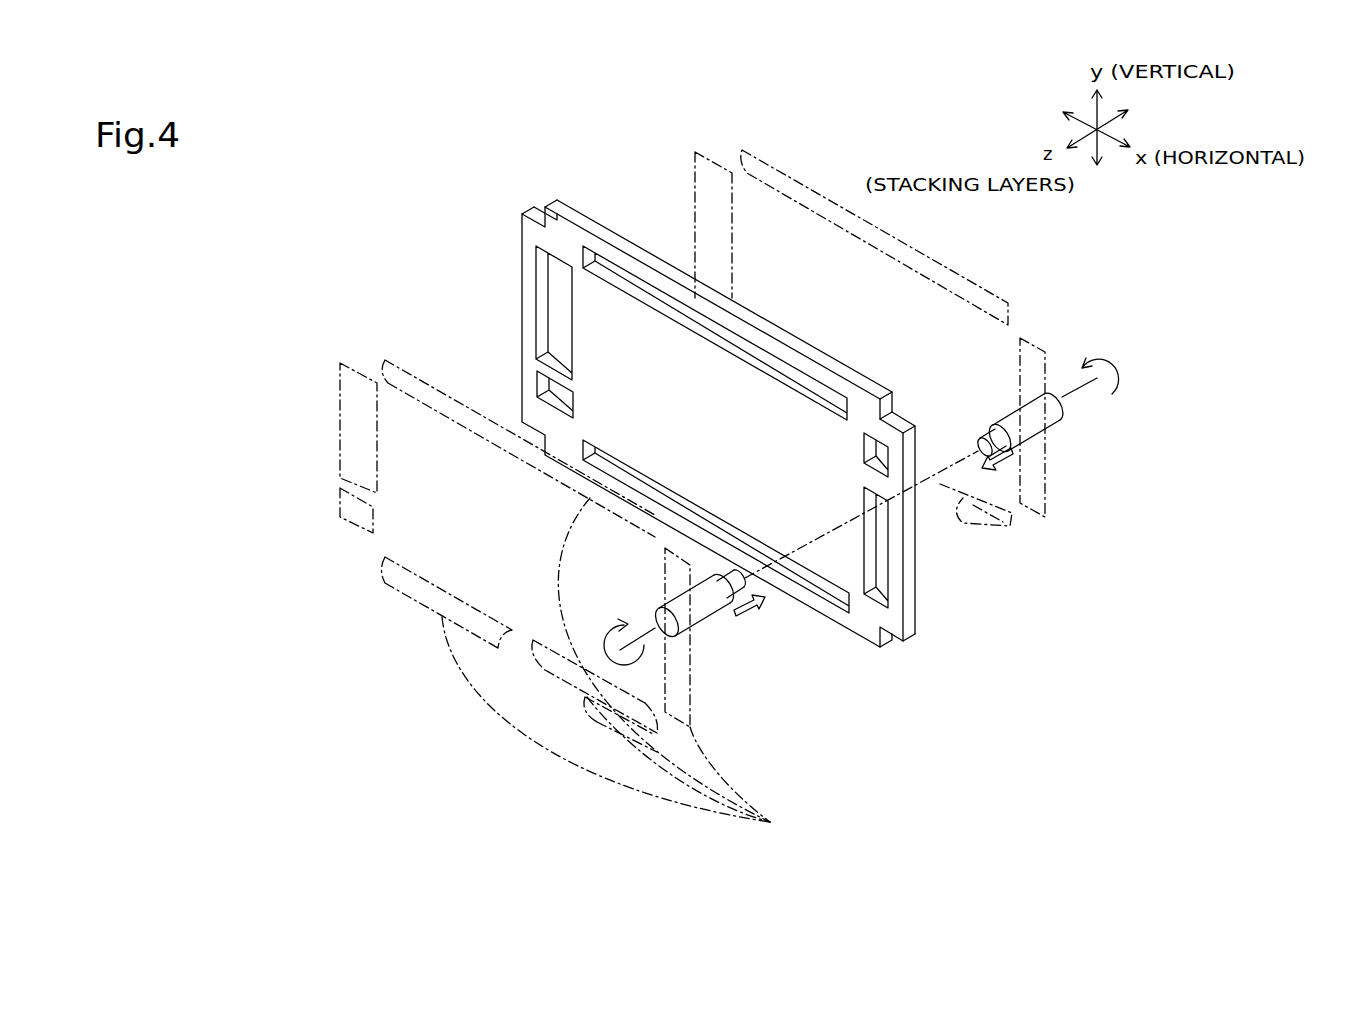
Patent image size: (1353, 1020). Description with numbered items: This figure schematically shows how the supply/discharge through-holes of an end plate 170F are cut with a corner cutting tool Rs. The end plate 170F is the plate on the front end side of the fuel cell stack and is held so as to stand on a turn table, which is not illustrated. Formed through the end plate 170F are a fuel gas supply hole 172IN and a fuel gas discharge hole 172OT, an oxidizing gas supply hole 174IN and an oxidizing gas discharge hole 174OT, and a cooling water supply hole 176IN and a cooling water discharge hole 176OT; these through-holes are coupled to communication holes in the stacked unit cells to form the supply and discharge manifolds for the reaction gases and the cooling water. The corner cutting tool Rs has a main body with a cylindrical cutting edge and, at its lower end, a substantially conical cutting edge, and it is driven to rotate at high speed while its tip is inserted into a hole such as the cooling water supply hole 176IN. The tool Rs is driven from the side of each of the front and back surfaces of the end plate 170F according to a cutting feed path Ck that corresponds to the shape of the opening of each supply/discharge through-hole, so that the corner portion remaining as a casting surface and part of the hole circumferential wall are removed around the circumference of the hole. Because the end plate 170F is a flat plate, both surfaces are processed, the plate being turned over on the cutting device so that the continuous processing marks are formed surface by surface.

The end plate 170F is at (533, 208).
The cooling water discharge hole 176OT is at (552, 300).
The fuel gas discharge hole 172OT is at (540, 392).
The oxidizing gas discharge hole 174OT is at (710, 337).
The oxidizing gas supply hole 174IN is at (795, 548).
The fuel gas supply hole 172IN is at (878, 440).
The cooling water supply hole 176IN is at (872, 583).
The corner cutting tool Rs is at (1045, 458).
The cutting feed path Ck is at (963, 523).